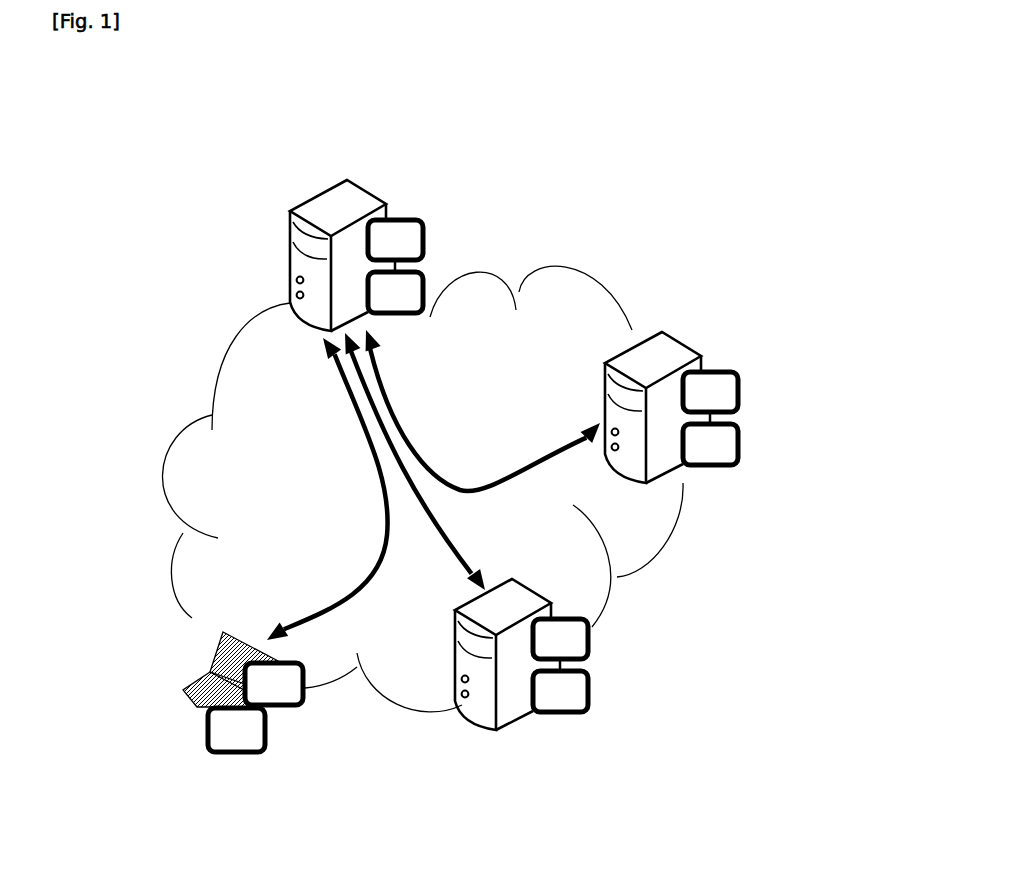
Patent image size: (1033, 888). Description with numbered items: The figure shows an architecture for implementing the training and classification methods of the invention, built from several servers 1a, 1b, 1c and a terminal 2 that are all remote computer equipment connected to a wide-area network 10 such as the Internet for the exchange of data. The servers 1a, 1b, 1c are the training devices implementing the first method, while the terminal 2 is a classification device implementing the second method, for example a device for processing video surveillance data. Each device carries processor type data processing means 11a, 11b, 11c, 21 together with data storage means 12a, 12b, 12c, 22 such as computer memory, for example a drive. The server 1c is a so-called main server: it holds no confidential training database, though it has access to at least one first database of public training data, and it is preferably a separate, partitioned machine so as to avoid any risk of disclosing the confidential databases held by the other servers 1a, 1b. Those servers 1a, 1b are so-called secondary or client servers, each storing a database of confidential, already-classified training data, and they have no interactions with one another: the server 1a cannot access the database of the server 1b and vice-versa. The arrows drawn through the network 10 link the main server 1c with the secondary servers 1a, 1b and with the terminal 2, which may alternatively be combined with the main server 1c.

The wide-area network 10 is at (209, 320).
The server 1a is at (665, 320).
The server 1b is at (520, 742).
The main server 1c is at (350, 170).
The data processing means 11a is at (748, 453).
The data processing means 11b is at (601, 702).
The data processing means 11c is at (436, 305).
The data storage means 12a is at (753, 379).
The data storage means 12b is at (604, 627).
The data storage means 12c is at (439, 229).
The terminal 2 is at (176, 682).
The data processing means 21 is at (316, 715).
The data storage means 22 is at (274, 759).